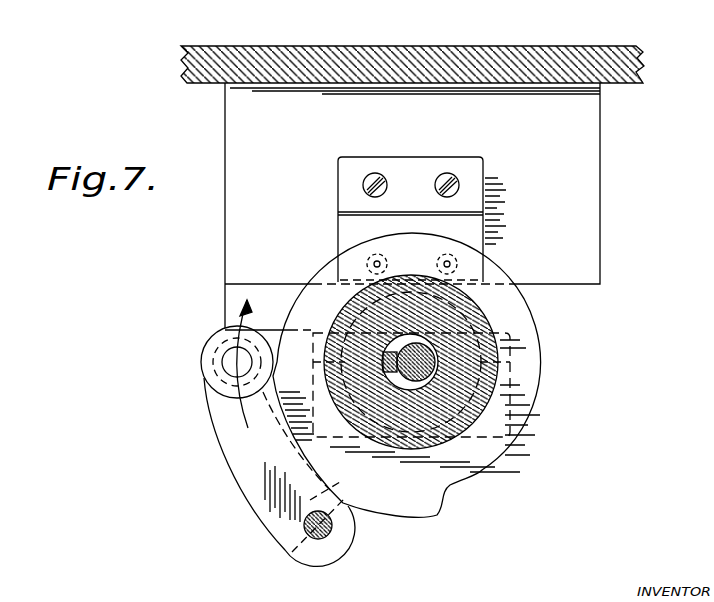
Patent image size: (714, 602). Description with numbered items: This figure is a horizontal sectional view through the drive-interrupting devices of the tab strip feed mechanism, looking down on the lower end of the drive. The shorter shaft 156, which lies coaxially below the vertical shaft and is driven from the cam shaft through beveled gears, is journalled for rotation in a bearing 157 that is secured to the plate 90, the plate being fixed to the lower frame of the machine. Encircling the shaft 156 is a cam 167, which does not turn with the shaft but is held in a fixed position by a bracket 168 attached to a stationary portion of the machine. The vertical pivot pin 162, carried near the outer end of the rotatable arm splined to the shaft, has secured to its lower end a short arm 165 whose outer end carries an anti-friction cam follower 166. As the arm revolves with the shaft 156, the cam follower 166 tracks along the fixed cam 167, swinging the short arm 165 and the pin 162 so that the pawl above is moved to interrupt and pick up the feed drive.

The plate 90 is at (563, 57).
The bearing 157 is at (590, 267).
The bracket 168 is at (338, 229).
The cam 167 is at (413, 506).
The shaft 156 is at (497, 377).
The short arm 165 is at (240, 482).
The anti-friction cam follower 166 is at (218, 393).
The pivot pin 162 is at (341, 554).